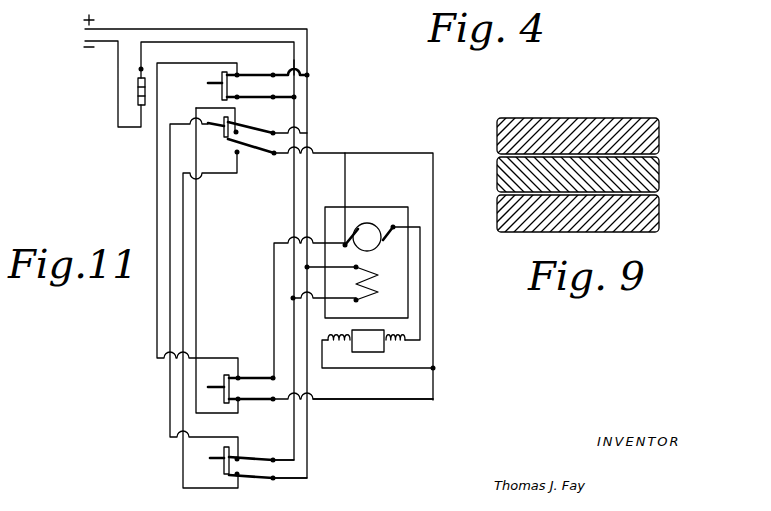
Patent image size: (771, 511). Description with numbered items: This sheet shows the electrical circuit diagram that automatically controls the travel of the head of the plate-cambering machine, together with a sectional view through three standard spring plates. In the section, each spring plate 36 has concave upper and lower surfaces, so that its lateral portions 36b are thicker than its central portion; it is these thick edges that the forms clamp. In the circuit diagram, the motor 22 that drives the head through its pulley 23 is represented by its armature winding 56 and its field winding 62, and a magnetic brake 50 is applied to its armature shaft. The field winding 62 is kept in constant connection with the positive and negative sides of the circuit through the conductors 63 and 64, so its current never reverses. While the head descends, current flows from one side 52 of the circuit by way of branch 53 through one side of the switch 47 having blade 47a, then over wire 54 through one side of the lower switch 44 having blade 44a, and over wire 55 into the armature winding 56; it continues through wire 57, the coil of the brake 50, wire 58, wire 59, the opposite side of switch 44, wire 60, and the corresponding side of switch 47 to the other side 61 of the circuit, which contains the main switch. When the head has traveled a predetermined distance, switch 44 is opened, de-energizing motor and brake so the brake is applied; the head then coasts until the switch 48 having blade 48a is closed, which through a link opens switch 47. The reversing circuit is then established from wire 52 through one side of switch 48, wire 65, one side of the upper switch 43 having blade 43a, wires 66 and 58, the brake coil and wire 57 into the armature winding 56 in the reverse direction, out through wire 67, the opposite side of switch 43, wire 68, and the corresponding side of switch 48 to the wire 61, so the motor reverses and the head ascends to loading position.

In FIG. 11, the motor 22 is at (127, 89).
In FIG. 11, the pulley 23 is at (398, 258).
In FIG. 9, the spring plate 36 is at (576, 121).
In FIG. 9, the lateral portions 36b is at (497, 135).
In FIG. 11, the upper switch 43 is at (251, 132).
In FIG. 11, the blade of switch 43 43a is at (224, 132).
In FIG. 11, the lower switch 44 is at (247, 392).
In FIG. 11, the blade of switch 44 44a is at (224, 383).
In FIG. 11, the switch 47 is at (241, 86).
In FIG. 11, the blade of switch 47 47a is at (204, 86).
In FIG. 11, the switch 48 is at (248, 466).
In FIG. 11, the blade of switch 48 48a is at (224, 452).
In FIG. 11, the magnetic brake 50 is at (380, 348).
In FIG. 11, the one side of electric circuit 52 is at (214, 26).
In FIG. 11, the branch 53 is at (293, 75).
In FIG. 11, the wire 54 is at (155, 199).
In FIG. 11, the wire 55 is at (274, 280).
In FIG. 11, the armature winding of the motor 56 is at (353, 230).
In FIG. 11, the wire 57 is at (422, 290).
In FIG. 11, the wire 58 is at (360, 368).
In FIG. 11, the wire 59 is at (373, 410).
In FIG. 11, the wire 60 is at (196, 279).
In FIG. 11, the other side of circuit 61 is at (246, 40).
In FIG. 11, the field winding 62 is at (376, 282).
In FIG. 11, the conductor 63 is at (332, 260).
In FIG. 11, the conductor 64 is at (325, 292).
In FIG. 11, the wire 65 is at (184, 252).
In FIG. 11, the wire 66 is at (433, 209).
In FIG. 11, the wire 67 is at (345, 184).
In FIG. 11, the wire 68 is at (170, 281).